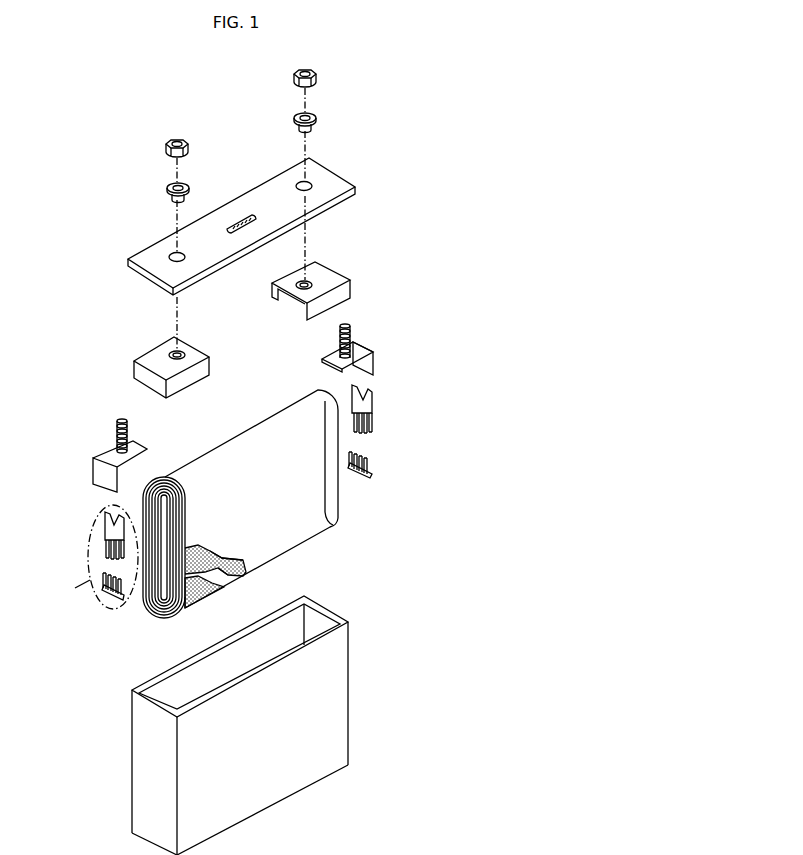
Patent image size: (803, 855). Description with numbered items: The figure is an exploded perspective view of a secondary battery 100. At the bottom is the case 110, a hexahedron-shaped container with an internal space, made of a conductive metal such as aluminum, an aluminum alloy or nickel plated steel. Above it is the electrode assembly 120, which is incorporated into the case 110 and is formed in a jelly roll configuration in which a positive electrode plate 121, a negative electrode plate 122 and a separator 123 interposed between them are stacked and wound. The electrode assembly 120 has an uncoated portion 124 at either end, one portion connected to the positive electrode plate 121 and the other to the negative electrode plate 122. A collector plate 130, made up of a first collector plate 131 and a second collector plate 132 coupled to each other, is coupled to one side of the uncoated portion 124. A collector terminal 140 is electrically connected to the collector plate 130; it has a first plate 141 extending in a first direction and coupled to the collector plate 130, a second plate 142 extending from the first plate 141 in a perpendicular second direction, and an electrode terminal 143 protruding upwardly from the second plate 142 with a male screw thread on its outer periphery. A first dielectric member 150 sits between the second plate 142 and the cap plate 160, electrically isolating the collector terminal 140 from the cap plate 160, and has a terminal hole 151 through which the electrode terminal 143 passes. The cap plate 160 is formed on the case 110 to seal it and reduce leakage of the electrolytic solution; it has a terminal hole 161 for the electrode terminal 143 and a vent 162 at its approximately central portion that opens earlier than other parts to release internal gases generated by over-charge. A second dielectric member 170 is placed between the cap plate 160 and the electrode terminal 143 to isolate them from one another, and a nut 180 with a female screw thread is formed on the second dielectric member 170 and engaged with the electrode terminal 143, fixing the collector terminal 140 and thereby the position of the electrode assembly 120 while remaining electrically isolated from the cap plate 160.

The secondary battery 100 is at (90, 91).
The case 110 is at (349, 675).
The electrode assembly 120 is at (272, 521).
The positive electrode plate 121 is at (198, 601).
The negative electrode plate 122 is at (243, 577).
The separator 123 is at (229, 586).
The uncoated portion 124 is at (176, 606).
The collector plate 130 is at (234, 513).
The first collector plate 131 is at (366, 405).
The second collector plate 132 is at (373, 476).
The collector terminal 140 is at (237, 390).
The first plate 141 is at (378, 365).
The second plate 142 is at (358, 356).
The electrode terminal 143 is at (346, 324).
The first dielectric member 150 is at (238, 314).
The terminal hole 151 is at (181, 352).
The cap plate 160 is at (254, 216).
The terminal hole 161 is at (301, 182).
The vent 162 is at (239, 221).
The second dielectric member 170 is at (318, 121).
The nut 180 is at (318, 78).